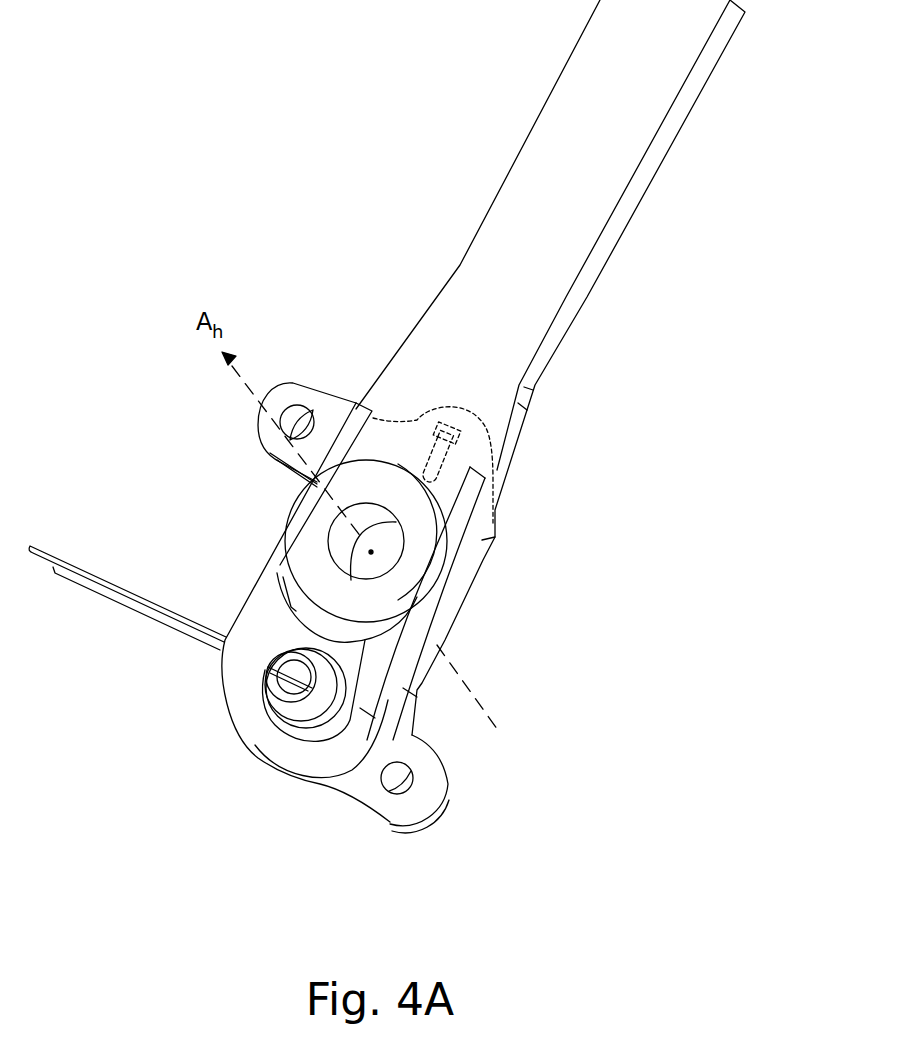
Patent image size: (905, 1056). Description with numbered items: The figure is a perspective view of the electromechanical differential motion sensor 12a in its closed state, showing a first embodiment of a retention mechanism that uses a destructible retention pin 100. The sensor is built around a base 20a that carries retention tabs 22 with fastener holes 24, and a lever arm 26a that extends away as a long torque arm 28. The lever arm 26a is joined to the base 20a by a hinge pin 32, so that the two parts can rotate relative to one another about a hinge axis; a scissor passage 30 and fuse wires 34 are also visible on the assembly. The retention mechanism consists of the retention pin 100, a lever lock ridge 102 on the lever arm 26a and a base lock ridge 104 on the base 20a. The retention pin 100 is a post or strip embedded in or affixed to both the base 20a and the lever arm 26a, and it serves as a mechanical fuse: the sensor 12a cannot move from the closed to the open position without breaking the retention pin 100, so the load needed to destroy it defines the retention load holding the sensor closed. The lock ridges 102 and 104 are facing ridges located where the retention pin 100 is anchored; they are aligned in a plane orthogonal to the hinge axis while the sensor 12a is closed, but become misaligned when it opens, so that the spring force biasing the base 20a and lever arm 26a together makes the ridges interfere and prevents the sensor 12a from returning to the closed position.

The differential motion sensor 12a is at (252, 134).
The torque arm 28 is at (628, 107).
The lever arm 26a is at (586, 321).
The base 20a is at (331, 792).
The retention tabs 22 is at (300, 398).
The fastener holes 24 is at (308, 420).
The hinge pin 32 is at (308, 563).
The scissor passage 30 is at (290, 692).
The fuse wires 34 is at (165, 628).
The retention pin 100 is at (430, 440).
The lever lock ridge 102 is at (452, 448).
The base lock ridge 104 is at (448, 413).